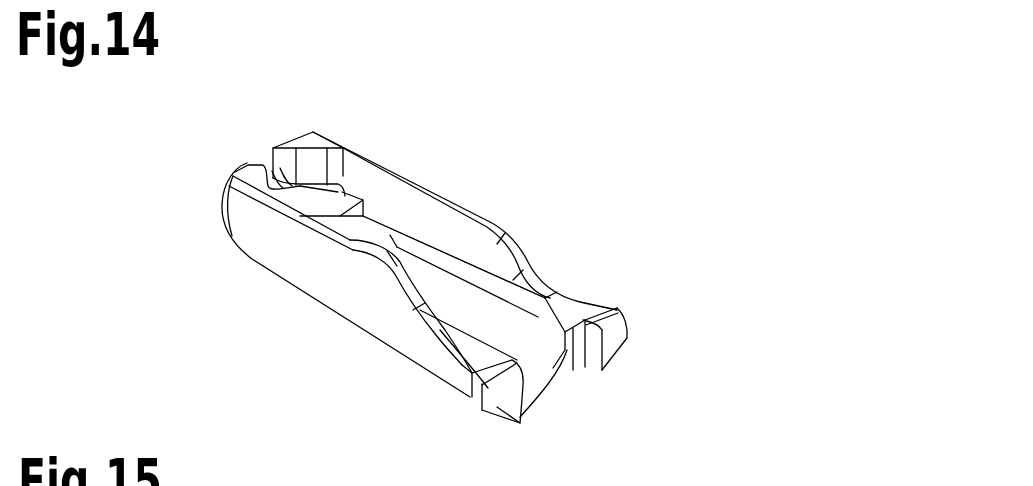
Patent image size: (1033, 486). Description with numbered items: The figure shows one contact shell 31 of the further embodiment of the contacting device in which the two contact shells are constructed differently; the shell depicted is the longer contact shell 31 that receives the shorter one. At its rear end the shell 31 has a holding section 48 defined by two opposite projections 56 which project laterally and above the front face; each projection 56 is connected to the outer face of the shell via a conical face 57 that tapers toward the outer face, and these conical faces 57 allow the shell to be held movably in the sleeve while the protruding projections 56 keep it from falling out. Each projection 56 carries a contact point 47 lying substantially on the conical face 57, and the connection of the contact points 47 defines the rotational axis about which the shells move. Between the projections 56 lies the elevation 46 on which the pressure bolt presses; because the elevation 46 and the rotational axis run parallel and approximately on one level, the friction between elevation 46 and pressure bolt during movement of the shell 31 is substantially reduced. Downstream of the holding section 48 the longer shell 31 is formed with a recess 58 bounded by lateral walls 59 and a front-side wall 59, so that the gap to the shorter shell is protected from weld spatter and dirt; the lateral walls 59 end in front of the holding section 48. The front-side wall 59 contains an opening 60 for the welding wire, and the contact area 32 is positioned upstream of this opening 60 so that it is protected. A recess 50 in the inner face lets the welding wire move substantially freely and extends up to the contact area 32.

The contact shell 31 is at (158, 222).
The contact area 32 is at (343, 228).
The elevation 46 is at (573, 363).
The contact point 47 is at (613, 300).
The holding section 48 is at (655, 263).
The recess 50 is at (495, 329).
The projection 56 is at (510, 407).
The conical face 57 is at (476, 385).
The recess 58 is at (389, 186).
The wall 59 is at (236, 166).
The opening 60 is at (264, 143).